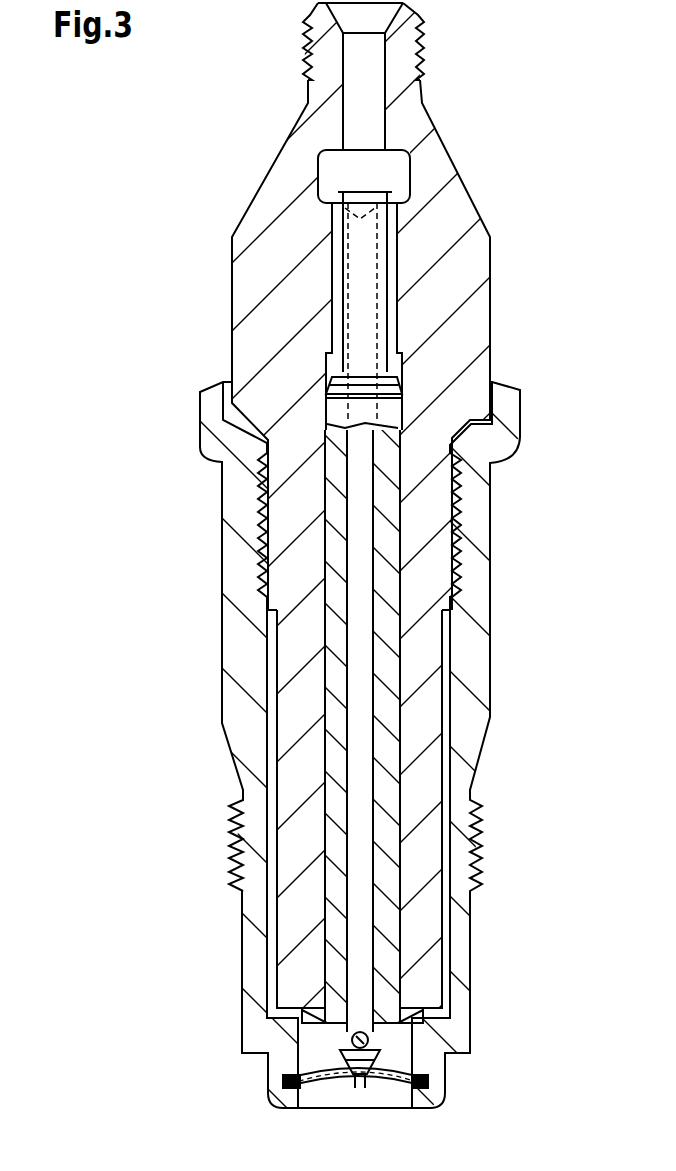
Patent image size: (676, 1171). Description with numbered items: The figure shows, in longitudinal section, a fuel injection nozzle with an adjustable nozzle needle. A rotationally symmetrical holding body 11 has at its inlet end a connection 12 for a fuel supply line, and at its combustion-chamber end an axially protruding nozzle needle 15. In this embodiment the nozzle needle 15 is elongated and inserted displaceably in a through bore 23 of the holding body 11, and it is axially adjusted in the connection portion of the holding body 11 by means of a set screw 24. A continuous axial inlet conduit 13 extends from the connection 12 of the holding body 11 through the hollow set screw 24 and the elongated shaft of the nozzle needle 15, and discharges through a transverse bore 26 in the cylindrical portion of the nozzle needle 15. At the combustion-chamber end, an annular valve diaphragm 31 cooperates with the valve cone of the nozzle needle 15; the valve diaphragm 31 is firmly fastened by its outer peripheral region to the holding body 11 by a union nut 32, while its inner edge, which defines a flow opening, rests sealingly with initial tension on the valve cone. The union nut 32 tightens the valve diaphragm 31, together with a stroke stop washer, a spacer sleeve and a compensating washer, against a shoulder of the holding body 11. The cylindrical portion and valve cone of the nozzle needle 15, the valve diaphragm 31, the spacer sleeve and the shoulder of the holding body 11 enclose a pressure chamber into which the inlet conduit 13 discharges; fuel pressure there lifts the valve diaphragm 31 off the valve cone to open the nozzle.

The holding body 11 is at (472, 330).
The connection 12 is at (418, 38).
The inlet conduit 13 is at (355, 597).
The nozzle needle 15 is at (327, 1013).
The through bore 23 is at (400, 385).
The set screw 24 is at (380, 289).
The transverse bore 26 is at (372, 1050).
The valve diaphragm 31 is at (390, 1083).
The union nut 32 is at (485, 609).